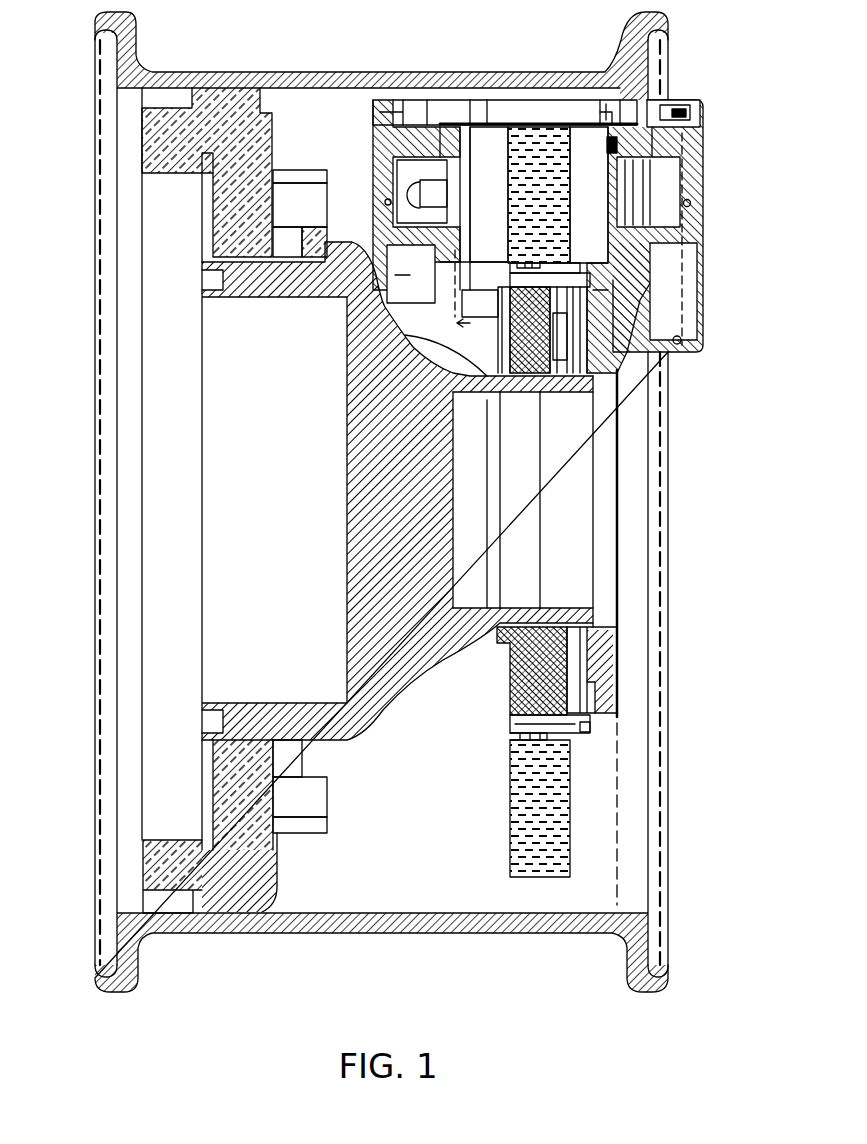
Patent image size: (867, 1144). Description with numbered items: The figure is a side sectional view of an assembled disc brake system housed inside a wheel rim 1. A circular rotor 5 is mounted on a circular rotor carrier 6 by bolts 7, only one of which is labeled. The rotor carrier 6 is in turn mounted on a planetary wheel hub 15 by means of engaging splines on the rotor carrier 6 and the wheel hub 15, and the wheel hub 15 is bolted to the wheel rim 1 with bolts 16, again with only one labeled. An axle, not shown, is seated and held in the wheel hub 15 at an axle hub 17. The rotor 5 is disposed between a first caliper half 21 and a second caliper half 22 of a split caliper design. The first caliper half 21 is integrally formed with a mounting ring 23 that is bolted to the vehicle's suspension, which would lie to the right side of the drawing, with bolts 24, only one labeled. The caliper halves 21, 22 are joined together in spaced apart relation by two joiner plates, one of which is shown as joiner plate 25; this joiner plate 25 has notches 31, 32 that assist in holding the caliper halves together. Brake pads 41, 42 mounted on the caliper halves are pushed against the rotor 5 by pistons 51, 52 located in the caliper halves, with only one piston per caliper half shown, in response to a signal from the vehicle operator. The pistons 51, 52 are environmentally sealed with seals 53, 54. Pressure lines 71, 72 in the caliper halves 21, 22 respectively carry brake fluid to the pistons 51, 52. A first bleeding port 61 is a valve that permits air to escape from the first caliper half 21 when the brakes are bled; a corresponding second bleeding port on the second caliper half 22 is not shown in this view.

The wheel rim 1 is at (223, 97).
The pressure line 72 is at (262, 100).
The piston 52 is at (386, 200).
The second caliper half 22 is at (373, 165).
The notch 32 is at (425, 108).
The seal 54 is at (460, 128).
The brake pad 42 is at (487, 150).
The joiner plate 25 is at (543, 115).
The seal 53 is at (607, 115).
The notch 31 is at (660, 100).
The first caliper half 21 is at (687, 147).
The pressure line 71 is at (691, 203).
The piston 51 is at (650, 193).
The brake pad 41 is at (593, 233).
The first bleeding port 61 is at (678, 345).
The planetary wheel hub 15 is at (375, 488).
The axle hub 17 is at (473, 533).
The rotor carrier 6 is at (510, 677).
The bolt 24 is at (563, 652).
The mounting ring 23 is at (607, 688).
The bolt 7 is at (582, 727).
The rotor 5 is at (550, 807).
The bolt 16 is at (290, 798).